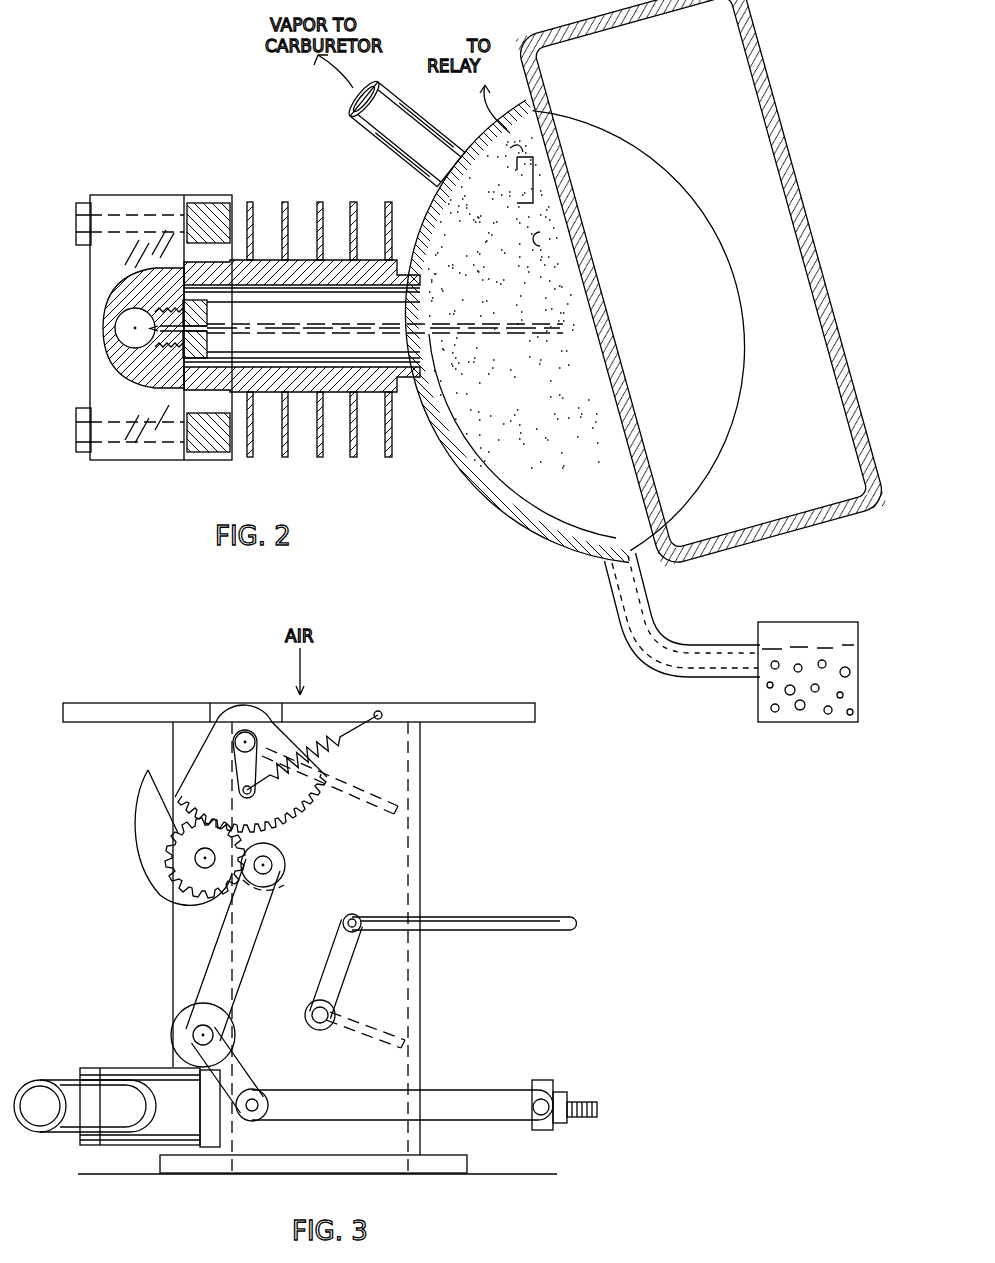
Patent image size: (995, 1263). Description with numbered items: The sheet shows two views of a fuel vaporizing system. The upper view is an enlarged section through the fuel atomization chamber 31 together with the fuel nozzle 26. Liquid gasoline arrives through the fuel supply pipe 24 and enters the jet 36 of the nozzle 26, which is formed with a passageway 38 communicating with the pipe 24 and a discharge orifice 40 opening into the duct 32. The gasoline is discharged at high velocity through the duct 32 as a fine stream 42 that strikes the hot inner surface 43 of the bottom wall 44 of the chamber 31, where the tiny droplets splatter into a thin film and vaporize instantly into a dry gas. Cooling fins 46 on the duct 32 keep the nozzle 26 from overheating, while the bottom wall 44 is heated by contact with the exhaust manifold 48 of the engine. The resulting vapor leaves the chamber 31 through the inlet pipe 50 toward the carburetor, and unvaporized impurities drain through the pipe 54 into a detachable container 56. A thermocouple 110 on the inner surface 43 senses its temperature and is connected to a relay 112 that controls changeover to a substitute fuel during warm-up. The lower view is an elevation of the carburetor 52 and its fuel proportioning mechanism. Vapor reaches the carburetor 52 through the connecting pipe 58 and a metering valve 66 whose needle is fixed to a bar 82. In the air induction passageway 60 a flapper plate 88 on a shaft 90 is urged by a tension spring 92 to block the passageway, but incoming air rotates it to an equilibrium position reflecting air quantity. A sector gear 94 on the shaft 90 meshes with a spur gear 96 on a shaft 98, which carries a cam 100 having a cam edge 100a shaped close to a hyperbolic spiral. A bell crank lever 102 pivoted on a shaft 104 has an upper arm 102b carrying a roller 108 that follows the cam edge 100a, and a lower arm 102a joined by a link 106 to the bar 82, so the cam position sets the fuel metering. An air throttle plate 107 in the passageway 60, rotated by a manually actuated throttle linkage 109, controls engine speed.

In FIG. 2, the fuel supply pipe 24 is at (115, 330).
In FIG. 2, the fuel nozzle 26 is at (141, 462).
In FIG. 2, the fuel atomization chamber 31 is at (446, 513).
In FIG. 2, the duct 32 is at (347, 293).
In FIG. 2, the jet 36 is at (205, 308).
In FIG. 2, the passageway 38 is at (172, 310).
In FIG. 2, the discharge orifice 40 is at (205, 333).
In FIG. 2, the fine stream 42 is at (360, 333).
In FIG. 2, the hot inner surface 43 is at (545, 235).
In FIG. 2, the bottom wall 44 is at (568, 285).
In FIG. 2, the cooling fins 46 is at (281, 210).
In FIG. 2, the exhaust manifold 48 is at (779, 102).
In FIG. 2, the inlet pipe 50 is at (366, 135).
In FIG. 2, the drain pipe 54 is at (645, 600).
In FIG. 2, the container 56 is at (800, 622).
In FIG. 2, the thermocouple 110 is at (525, 173).
In FIG. 2, the relay 112 is at (476, 106).
In FIG. 3, the carburetor 52 is at (174, 686).
In FIG. 3, the connecting pipe 58 is at (58, 1130).
In FIG. 3, the air induction passageway 60 is at (408, 887).
In FIG. 3, the metering valve 66 is at (112, 1067).
In FIG. 3, the bar 82 is at (542, 1080).
In FIG. 3, the flapper plate 88 is at (383, 800).
In FIG. 3, the shaft 90 is at (245, 730).
In FIG. 3, the tension spring 92 is at (335, 740).
In FIG. 3, the sector gear 94 is at (293, 822).
In FIG. 3, the spur gear 96 is at (175, 868).
In FIG. 3, the shaft 98 is at (195, 888).
In FIG. 3, the cam 100 is at (145, 832).
In FIG. 3, the cam edge 100a is at (136, 845).
In FIG. 3, the bell crank lever 102 is at (213, 946).
In FIG. 3, the lower arm 102a is at (243, 1073).
In FIG. 3, the upper arm 102b is at (250, 928).
In FIG. 3, the shaft 104 is at (197, 1035).
In FIG. 3, the link 106 is at (445, 1095).
In FIG. 3, the air throttle plate 107 is at (387, 1030).
In FIG. 3, the roller 108 is at (285, 867).
In FIG. 3, the throttle linkage 109 is at (490, 920).